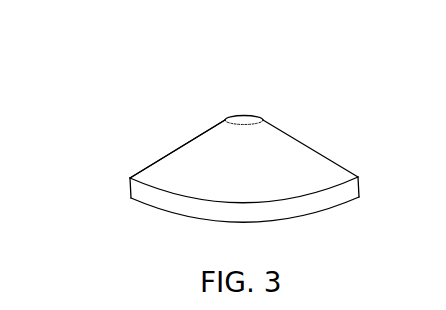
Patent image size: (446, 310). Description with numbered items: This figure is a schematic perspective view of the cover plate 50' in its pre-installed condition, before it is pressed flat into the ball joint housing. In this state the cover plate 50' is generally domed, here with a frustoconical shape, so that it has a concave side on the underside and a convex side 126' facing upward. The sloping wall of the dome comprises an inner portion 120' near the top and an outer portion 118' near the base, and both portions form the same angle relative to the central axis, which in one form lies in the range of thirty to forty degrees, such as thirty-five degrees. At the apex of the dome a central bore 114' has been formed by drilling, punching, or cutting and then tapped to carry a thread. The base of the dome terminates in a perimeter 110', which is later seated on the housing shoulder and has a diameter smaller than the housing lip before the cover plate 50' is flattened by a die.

The perimeter 110' is at (200, 193).
The outer portion 118' is at (94, 151).
The inner portion 120' is at (175, 118).
The cover plate 50' is at (171, 136).
The convex side 126' is at (335, 138).
The central bore 114' is at (260, 79).